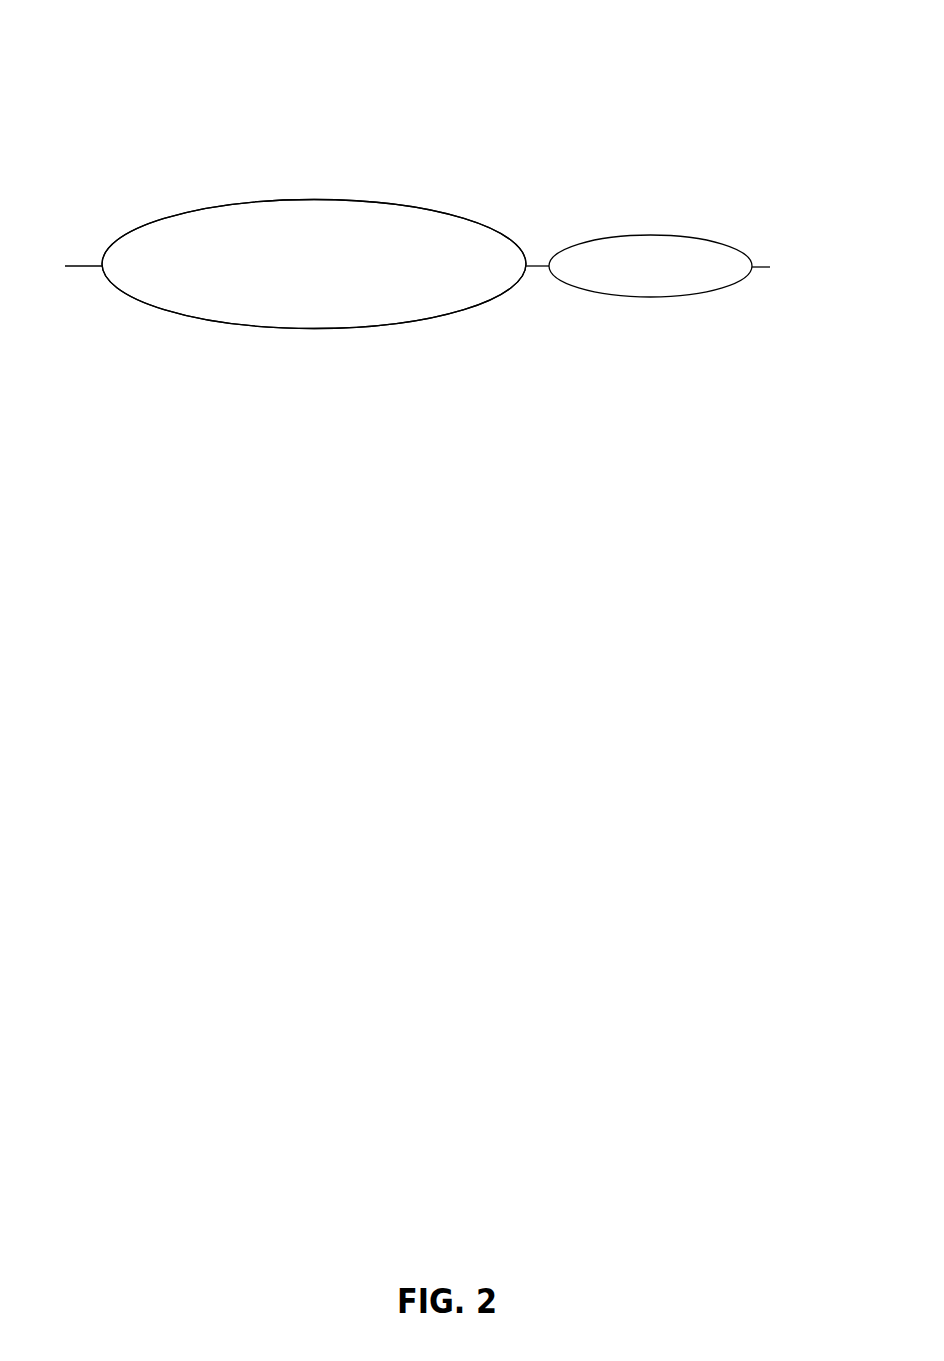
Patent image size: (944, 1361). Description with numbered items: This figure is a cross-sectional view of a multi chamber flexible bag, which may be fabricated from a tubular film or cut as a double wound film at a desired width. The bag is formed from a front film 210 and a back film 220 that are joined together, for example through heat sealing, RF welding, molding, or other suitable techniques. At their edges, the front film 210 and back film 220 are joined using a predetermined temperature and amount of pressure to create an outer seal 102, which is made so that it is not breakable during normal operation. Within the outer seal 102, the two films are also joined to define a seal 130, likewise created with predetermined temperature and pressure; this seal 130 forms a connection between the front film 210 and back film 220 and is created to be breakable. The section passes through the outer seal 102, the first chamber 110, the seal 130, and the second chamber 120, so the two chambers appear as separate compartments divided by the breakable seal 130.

The outer seal 102 is at (88, 266).
The first chamber 110 is at (712, 268).
The second chamber 120 is at (210, 292).
The seal 130 is at (541, 266).
The front film 210 is at (292, 200).
The back film 220 is at (330, 329).